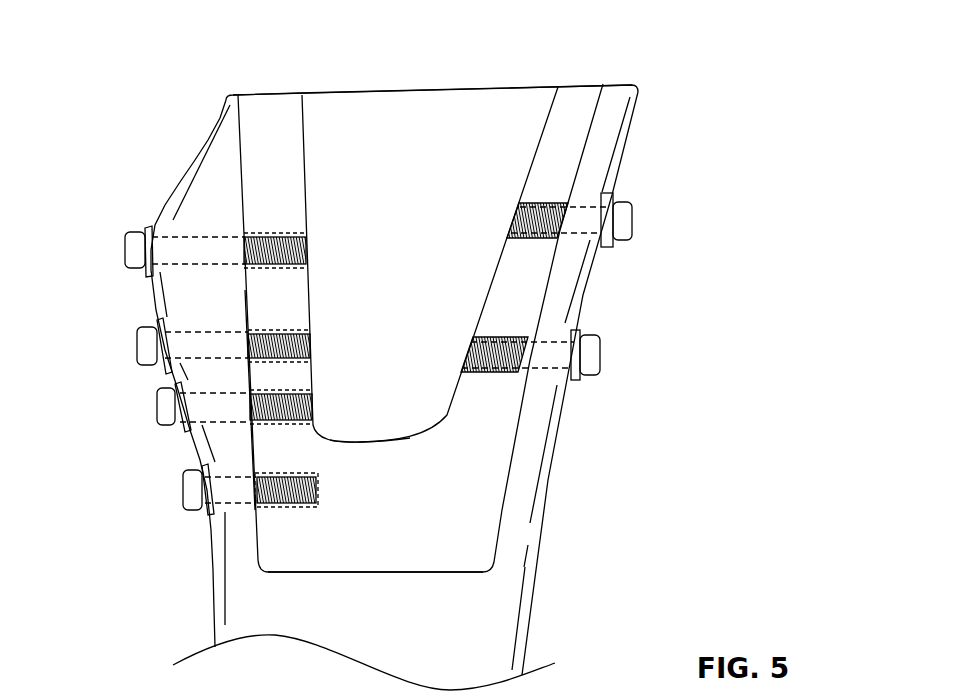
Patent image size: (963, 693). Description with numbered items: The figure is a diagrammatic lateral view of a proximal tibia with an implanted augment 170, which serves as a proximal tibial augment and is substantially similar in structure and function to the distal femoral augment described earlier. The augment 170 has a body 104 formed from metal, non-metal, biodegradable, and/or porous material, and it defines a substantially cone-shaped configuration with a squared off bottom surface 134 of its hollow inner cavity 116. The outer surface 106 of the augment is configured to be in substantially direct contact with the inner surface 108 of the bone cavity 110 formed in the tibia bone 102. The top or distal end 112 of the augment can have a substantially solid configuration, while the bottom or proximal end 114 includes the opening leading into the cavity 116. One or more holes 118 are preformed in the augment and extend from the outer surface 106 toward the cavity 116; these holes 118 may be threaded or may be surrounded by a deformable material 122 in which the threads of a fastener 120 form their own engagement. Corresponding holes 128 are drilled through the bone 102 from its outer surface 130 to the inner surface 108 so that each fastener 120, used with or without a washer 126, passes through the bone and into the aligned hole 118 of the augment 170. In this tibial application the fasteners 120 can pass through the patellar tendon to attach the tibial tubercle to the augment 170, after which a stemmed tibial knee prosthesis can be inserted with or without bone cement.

The bone 102 is at (533, 600).
The body 104 is at (500, 528).
The outer surface 106 is at (560, 300).
The inner surface 108 is at (260, 528).
The bone cavity 110 is at (248, 440).
The distal end 112 is at (312, 575).
The proximal end 114 is at (273, 90).
The inner cavity 116 is at (362, 117).
The holes 118 is at (270, 233).
The fastener 120 is at (133, 347).
The deformable material 122 is at (542, 200).
The washer 126 is at (140, 277).
The holes 128 is at (203, 238).
The outer surface 130 is at (523, 658).
The bottom surface 134 is at (362, 440).
The augment 170 is at (472, 455).